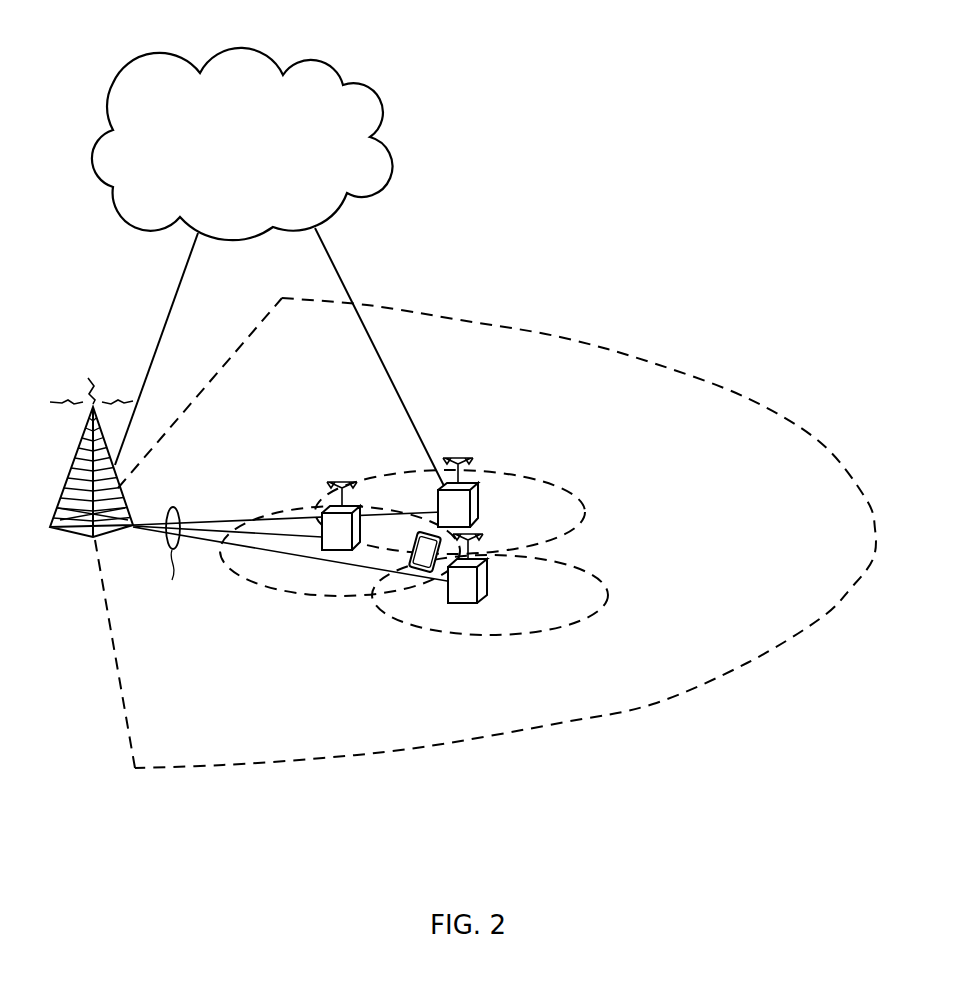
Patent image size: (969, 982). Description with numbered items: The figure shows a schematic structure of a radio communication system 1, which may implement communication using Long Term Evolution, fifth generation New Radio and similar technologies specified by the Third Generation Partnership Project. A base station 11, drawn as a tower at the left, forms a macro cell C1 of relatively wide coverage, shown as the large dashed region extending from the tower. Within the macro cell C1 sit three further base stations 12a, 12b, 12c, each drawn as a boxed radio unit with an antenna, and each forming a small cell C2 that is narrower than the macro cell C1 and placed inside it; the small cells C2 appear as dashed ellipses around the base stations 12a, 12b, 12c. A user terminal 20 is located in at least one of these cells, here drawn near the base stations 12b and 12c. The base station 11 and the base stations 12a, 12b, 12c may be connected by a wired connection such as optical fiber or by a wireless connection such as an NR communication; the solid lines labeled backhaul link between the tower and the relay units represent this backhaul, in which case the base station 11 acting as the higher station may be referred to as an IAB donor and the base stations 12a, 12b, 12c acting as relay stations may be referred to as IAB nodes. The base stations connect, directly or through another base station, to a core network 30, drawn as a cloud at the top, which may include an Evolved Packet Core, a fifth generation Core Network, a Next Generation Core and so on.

The radio communication system 1 is at (598, 174).
The core network 30 is at (314, 60).
The base station 11 is at (70, 467).
The base station 12a is at (483, 502).
The base station 12b is at (462, 605).
The base station 12c is at (320, 509).
The user terminal 20 is at (406, 568).
The macro cell C1 is at (668, 361).
The small cell C2 is at (297, 598).